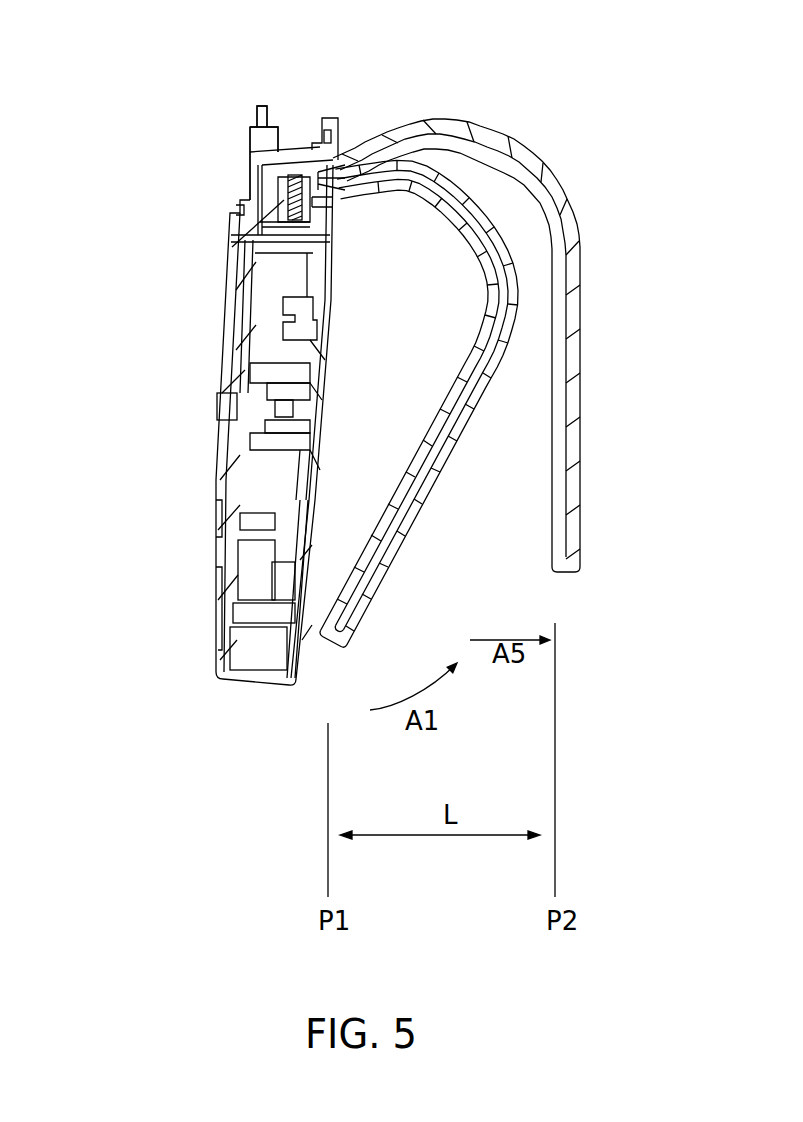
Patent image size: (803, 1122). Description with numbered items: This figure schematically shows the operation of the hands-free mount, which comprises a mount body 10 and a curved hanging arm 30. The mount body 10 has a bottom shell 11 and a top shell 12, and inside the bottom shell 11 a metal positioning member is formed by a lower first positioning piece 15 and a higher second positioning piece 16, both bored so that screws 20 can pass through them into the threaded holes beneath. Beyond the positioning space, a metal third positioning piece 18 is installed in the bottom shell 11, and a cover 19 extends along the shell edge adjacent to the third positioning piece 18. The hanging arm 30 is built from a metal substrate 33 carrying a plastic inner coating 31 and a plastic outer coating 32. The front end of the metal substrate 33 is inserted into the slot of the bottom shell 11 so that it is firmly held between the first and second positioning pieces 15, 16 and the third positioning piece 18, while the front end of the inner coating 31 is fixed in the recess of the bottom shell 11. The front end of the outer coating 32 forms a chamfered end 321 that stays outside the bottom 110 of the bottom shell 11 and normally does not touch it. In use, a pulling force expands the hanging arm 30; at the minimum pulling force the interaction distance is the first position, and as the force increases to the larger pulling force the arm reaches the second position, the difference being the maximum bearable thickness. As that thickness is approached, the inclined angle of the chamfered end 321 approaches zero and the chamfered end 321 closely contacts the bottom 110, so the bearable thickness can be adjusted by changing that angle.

The mount body 10 is at (185, 108).
The bottom shell 11 is at (333, 207).
The top shell 12 is at (250, 165).
The first positioning piece 15 is at (302, 207).
The second positioning piece 16 is at (300, 214).
The third positioning piece 18 is at (298, 168).
The cover 19 is at (283, 145).
The screw 20 is at (258, 234).
The hanging arm 30 is at (455, 476).
The inner coating 31 is at (445, 413).
The outer coating 32 is at (500, 378).
The metal substrate 33 is at (476, 404).
The bottom 110 is at (330, 328).
The chamfered end 321 is at (340, 178).